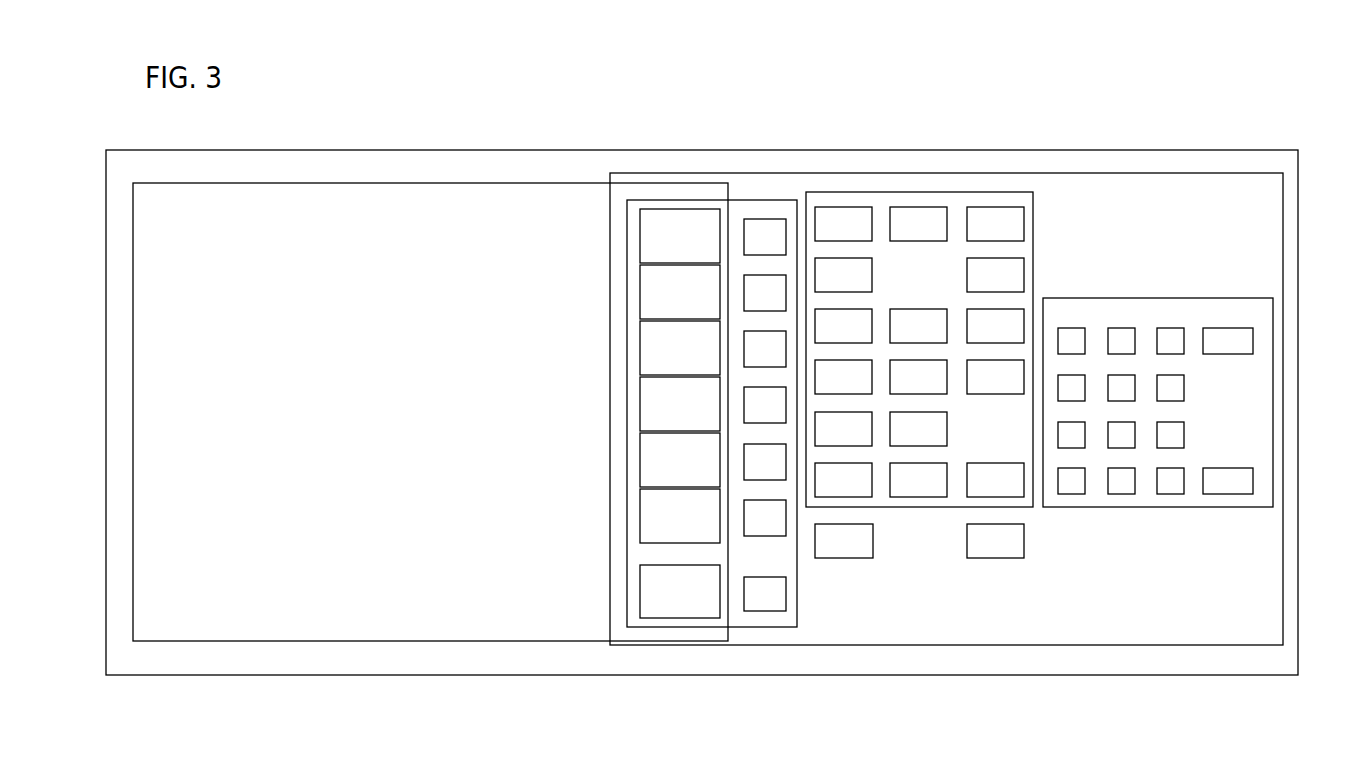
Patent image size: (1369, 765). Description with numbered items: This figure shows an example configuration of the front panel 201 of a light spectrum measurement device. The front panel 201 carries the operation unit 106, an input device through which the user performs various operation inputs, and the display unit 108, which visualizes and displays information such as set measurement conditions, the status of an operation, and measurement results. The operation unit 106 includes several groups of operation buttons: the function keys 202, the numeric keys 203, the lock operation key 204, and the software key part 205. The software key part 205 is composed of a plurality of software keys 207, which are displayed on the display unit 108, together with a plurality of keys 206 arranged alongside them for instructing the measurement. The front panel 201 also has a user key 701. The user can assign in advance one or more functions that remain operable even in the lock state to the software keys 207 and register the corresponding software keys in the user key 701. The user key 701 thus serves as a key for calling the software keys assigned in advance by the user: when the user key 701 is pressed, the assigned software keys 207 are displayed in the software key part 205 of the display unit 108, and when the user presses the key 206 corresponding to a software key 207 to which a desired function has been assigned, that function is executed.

The front panel 201 is at (412, 150).
The display unit 108 is at (133, 262).
The operation unit 106 is at (817, 173).
The software key part 205 is at (627, 256).
The software keys 207 is at (640, 596).
The keys 206 is at (786, 595).
The function keys 202 is at (1035, 262).
The numeric keys 203 is at (1273, 365).
The user key 701 is at (873, 548).
The lock operation key 204 is at (1024, 548).